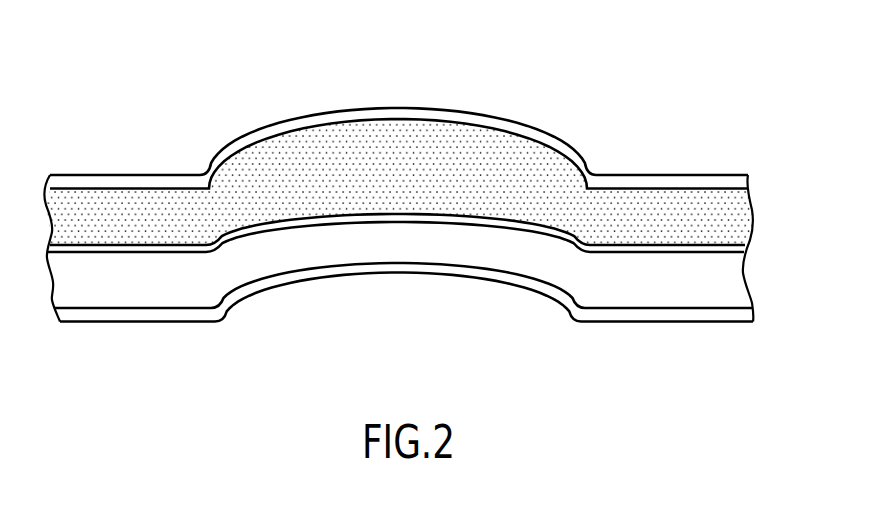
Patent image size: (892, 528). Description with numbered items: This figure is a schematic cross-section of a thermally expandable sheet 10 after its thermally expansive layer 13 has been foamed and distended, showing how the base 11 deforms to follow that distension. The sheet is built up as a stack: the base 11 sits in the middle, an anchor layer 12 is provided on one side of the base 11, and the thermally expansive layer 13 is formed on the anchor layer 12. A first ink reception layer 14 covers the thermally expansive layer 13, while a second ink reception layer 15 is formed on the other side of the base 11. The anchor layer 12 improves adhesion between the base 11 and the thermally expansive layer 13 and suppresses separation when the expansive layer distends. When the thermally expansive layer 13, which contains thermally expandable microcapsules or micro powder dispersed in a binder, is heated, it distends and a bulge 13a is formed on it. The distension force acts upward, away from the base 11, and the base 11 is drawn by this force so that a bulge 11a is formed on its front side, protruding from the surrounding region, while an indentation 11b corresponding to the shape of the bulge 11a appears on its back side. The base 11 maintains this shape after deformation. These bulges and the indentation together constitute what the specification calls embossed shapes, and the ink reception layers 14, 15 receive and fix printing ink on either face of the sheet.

The thermally expandable sheet 10 is at (690, 118).
The base 11 is at (436, 227).
The bulge 11a is at (473, 223).
The indentation 11b is at (481, 268).
The anchor layer 12 is at (738, 248).
The thermally expansive layer 13 is at (435, 151).
The bulge 13a is at (392, 121).
The first ink reception layer 14 is at (730, 182).
The second ink reception layer 15 is at (740, 315).